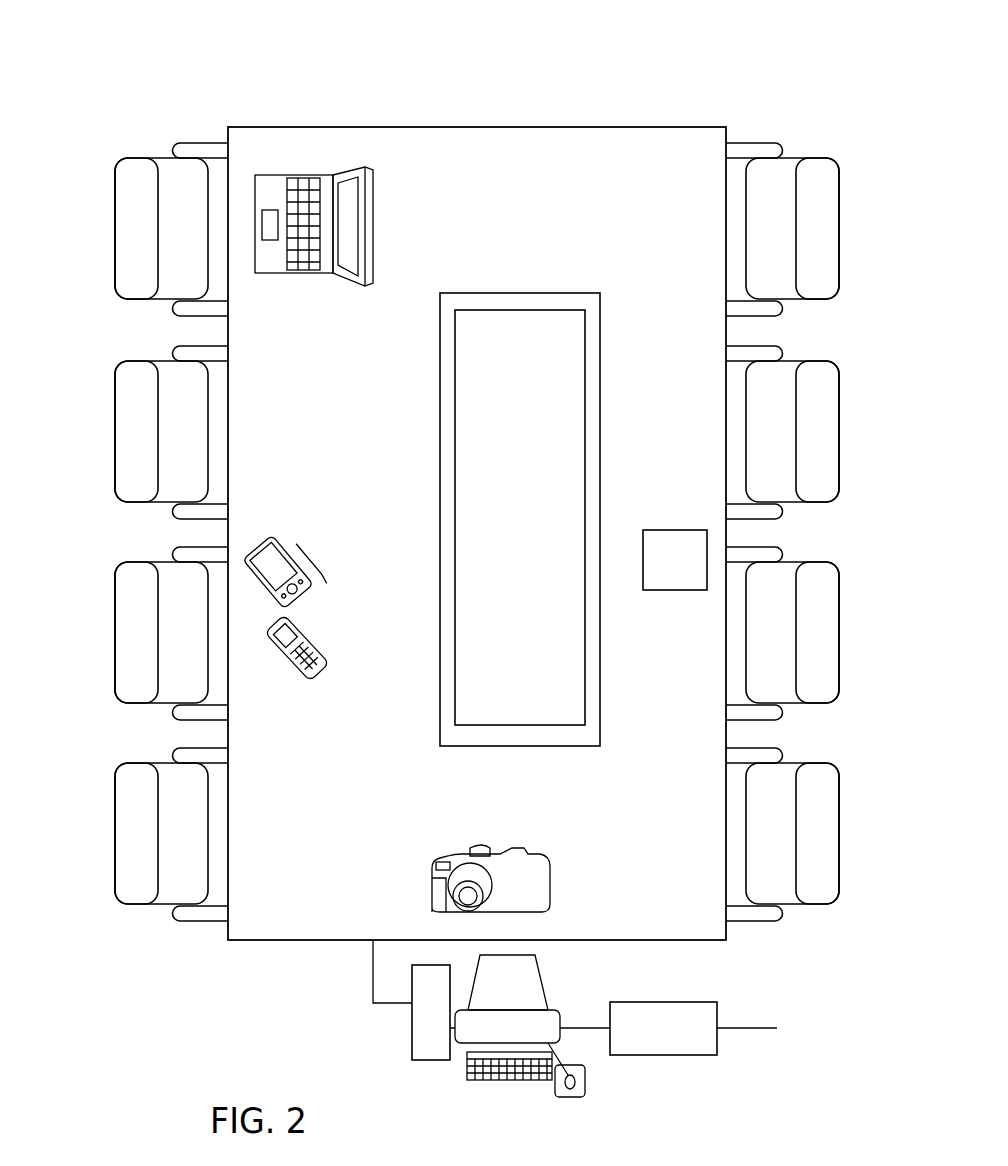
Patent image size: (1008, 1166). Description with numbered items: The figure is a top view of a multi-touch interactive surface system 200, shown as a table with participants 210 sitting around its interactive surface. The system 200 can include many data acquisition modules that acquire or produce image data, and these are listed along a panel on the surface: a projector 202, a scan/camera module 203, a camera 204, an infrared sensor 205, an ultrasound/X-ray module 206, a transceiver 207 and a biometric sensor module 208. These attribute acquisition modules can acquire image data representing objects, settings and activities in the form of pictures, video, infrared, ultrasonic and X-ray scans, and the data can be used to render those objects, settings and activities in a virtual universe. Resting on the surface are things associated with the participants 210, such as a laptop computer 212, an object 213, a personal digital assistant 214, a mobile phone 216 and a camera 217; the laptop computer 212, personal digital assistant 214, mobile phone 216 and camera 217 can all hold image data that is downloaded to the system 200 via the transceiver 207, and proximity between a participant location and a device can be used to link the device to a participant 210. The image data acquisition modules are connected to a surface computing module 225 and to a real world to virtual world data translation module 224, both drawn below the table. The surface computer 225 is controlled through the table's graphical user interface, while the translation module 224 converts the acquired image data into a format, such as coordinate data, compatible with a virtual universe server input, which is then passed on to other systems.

The interactive surface system 200 is at (188, 76).
The projector 202 is at (465, 333).
The scan/camera module 203 is at (465, 396).
The camera 204 is at (465, 458).
The infrared sensor 205 is at (465, 523).
The ultrasound/X-ray module 206 is at (465, 586).
The transceiver 207 is at (465, 650).
The biometric sensor module 208 is at (465, 713).
The participant 210 is at (114, 226).
The laptop computer 212 is at (375, 219).
The object 213 is at (674, 530).
The personal digital assistant 214 is at (280, 545).
The mobile phone 216 is at (292, 671).
The camera 217 is at (508, 885).
The real world to virtual world data translation module 224 is at (660, 1002).
The surface computing module 225 is at (412, 1042).